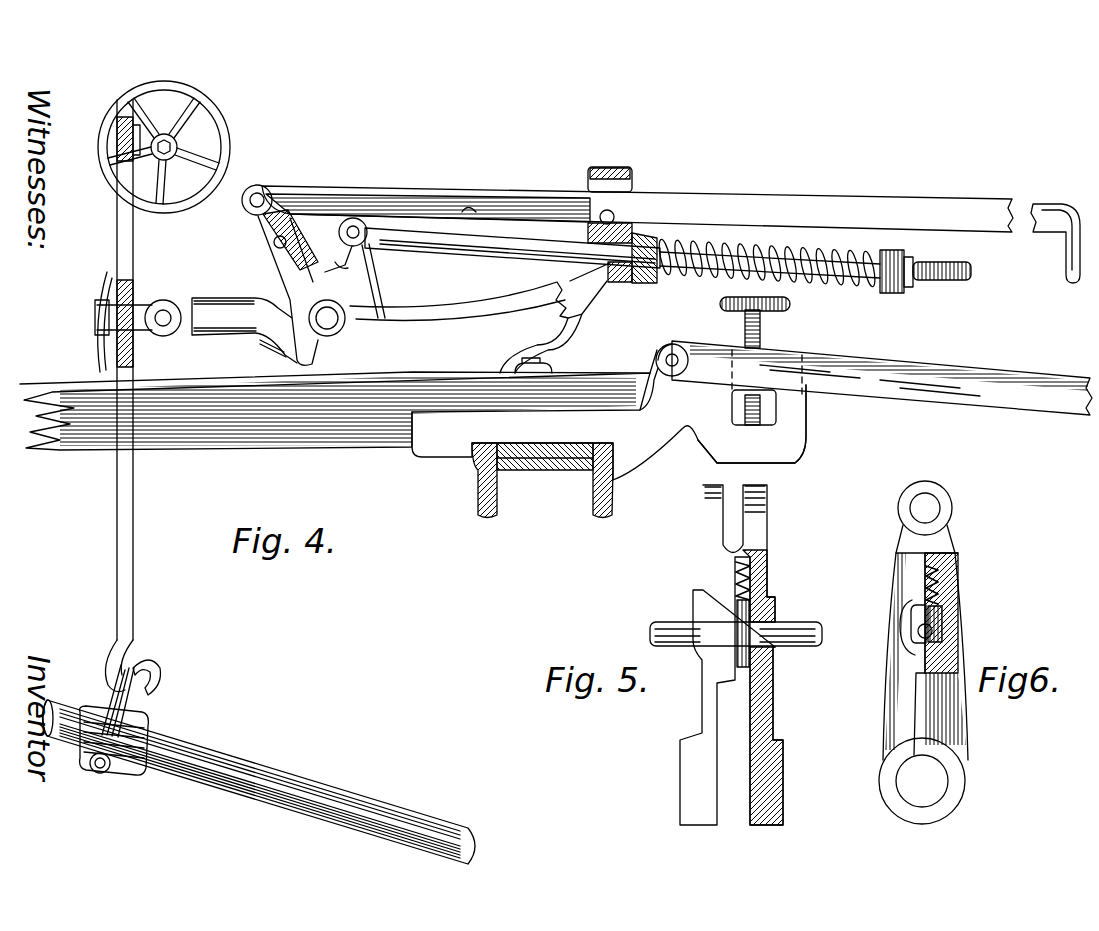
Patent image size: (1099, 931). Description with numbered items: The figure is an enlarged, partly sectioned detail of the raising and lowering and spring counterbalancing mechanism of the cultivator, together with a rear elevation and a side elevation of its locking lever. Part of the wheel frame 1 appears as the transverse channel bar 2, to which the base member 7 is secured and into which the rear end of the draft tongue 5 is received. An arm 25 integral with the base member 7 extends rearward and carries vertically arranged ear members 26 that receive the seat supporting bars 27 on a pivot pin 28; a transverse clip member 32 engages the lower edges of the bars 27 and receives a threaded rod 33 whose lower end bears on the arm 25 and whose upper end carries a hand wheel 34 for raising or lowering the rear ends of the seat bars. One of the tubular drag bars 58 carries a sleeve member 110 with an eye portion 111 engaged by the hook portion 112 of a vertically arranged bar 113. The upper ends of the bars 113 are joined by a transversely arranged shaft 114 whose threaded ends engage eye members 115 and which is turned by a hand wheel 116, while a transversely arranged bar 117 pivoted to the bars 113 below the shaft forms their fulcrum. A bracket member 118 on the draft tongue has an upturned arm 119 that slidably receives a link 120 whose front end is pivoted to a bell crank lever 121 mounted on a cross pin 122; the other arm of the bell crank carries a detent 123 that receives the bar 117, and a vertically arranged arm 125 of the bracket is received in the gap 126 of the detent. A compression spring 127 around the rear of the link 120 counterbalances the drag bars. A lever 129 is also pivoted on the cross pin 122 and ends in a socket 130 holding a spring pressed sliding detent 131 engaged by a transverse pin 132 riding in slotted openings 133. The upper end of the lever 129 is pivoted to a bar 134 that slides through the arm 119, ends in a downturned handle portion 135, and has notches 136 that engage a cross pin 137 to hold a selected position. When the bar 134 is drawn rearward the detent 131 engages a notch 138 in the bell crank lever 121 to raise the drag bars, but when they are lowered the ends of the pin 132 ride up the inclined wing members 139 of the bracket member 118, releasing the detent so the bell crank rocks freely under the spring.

In FIG. 4, the wheel frame 1 is at (593, 500).
In FIG. 4, the channel bar 2 is at (480, 502).
In FIG. 4, the draft tongue 5 is at (272, 448).
In FIG. 4, the base member 7 is at (426, 456).
In FIG. 4, the arm 25 is at (804, 440).
In FIG. 4, the ear members 26 is at (658, 352).
In FIG. 4, the seat supporting bars 27 is at (946, 366).
In FIG. 4, the pivot pin 28 is at (656, 370).
In FIG. 4, the clip member 32 is at (806, 408).
In FIG. 4, the threaded rod 33 is at (762, 336).
In FIG. 4, the hand wheel 34 is at (792, 304).
In FIG. 4, the tubular drag bars 58 is at (243, 762).
In FIG. 4, the sleeve members 110 is at (150, 718).
In FIG. 4, the eye portions 111 is at (138, 700).
In FIG. 4, the hook portions 112 is at (162, 666).
In FIG. 4, the vertically arranged bars 113 is at (134, 544).
In FIG. 4, the transversely arranged shaft 114 is at (176, 140).
In FIG. 4, the eye members 115 is at (180, 122).
In FIG. 4, the hand wheel 116 is at (232, 158).
In FIG. 4, the transversely arranged bar 117 is at (168, 308).
In FIG. 4, the bracket member 118 is at (436, 316).
In FIG. 4, the upturned arm 119 is at (560, 285).
In FIG. 4, the link 120 is at (500, 256).
In FIG. 4, the bell crank lever 121 is at (383, 290).
In FIG. 4, the cross pin 122 is at (343, 328).
In FIG. 4, the detent 123 is at (190, 336).
In FIG. 4, the vertically arranged arm 125 is at (98, 289).
In FIG. 4, the gap 126 is at (906, 262).
In FIG. 4, the compression spring 127 is at (812, 254).
In FIG. 4, the lever 129 is at (253, 214).
In FIG. 5, the lever 129 is at (702, 572).
In FIG. 6, the lever 129 is at (896, 573).
In FIG. 4, the socket 130 is at (266, 238).
In FIG. 5, the socket 130 is at (770, 588).
In FIG. 6, the socket 130 is at (944, 622).
In FIG. 4, the sliding detent 131 is at (276, 247).
In FIG. 5, the sliding detent 131 is at (776, 608).
In FIG. 6, the sliding detent 131 is at (950, 610).
In FIG. 4, the transverse pin 132 is at (340, 233).
In FIG. 5, the transverse pin 132 is at (800, 646).
In FIG. 6, the transverse pin 132 is at (932, 634).
In FIG. 4, the slotted openings 133 is at (342, 258).
In FIG. 5, the slotted openings 133 is at (770, 616).
In FIG. 6, the slotted openings 133 is at (914, 622).
In FIG. 4, the bar 134 is at (527, 193).
In FIG. 4, the handle portion 135 is at (1064, 264).
In FIG. 4, the notches 136 is at (586, 228).
In FIG. 4, the cross pin 137 is at (614, 213).
In FIG. 4, the notch 138 is at (338, 276).
In FIG. 4, the wing members 139 is at (292, 262).